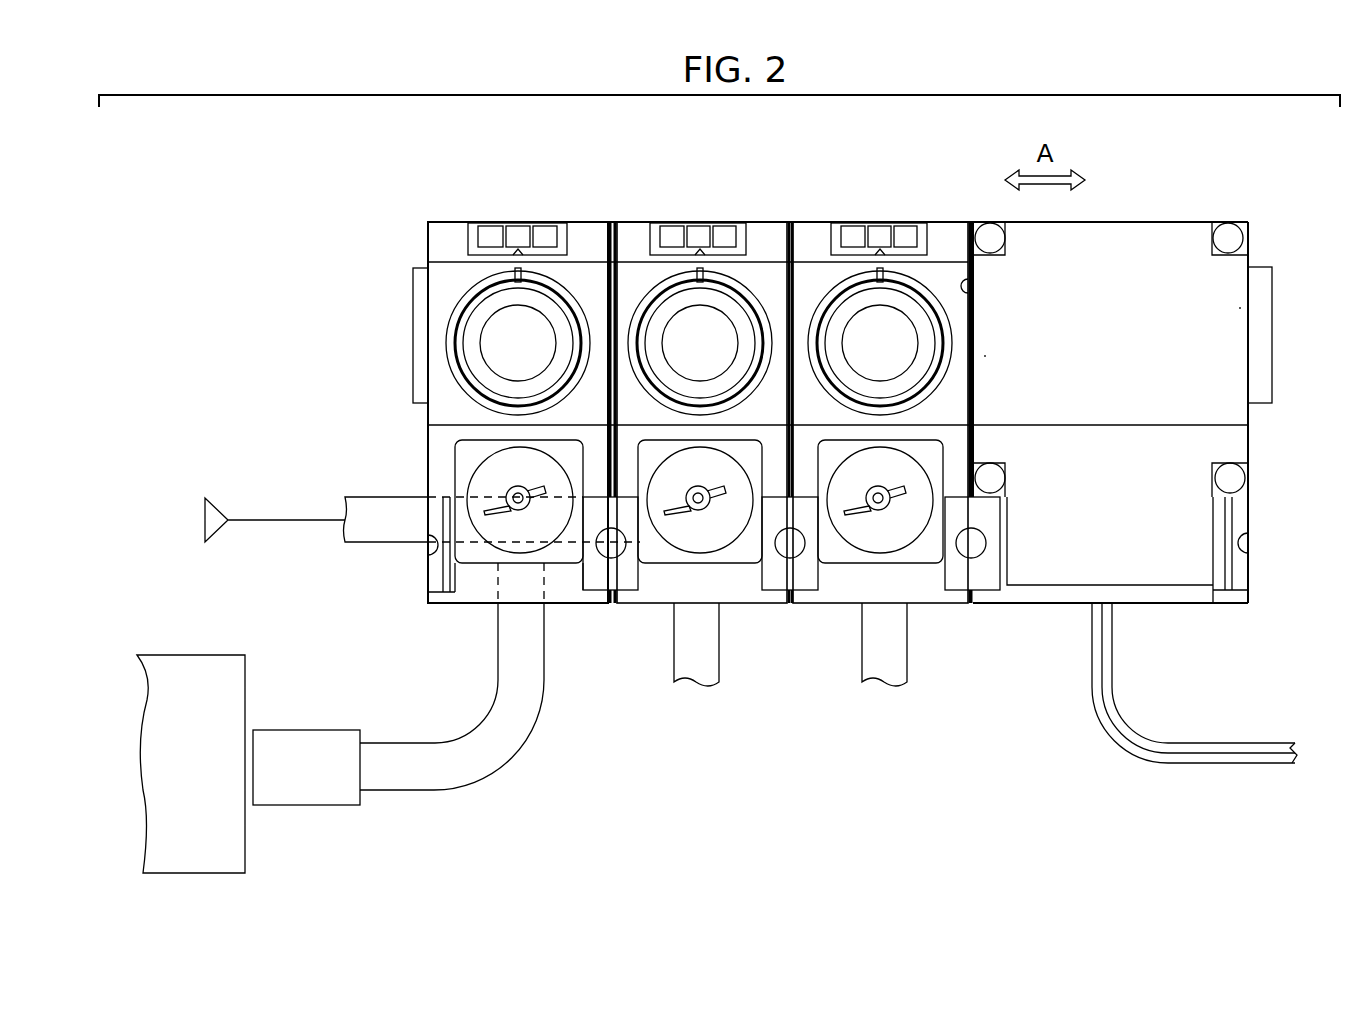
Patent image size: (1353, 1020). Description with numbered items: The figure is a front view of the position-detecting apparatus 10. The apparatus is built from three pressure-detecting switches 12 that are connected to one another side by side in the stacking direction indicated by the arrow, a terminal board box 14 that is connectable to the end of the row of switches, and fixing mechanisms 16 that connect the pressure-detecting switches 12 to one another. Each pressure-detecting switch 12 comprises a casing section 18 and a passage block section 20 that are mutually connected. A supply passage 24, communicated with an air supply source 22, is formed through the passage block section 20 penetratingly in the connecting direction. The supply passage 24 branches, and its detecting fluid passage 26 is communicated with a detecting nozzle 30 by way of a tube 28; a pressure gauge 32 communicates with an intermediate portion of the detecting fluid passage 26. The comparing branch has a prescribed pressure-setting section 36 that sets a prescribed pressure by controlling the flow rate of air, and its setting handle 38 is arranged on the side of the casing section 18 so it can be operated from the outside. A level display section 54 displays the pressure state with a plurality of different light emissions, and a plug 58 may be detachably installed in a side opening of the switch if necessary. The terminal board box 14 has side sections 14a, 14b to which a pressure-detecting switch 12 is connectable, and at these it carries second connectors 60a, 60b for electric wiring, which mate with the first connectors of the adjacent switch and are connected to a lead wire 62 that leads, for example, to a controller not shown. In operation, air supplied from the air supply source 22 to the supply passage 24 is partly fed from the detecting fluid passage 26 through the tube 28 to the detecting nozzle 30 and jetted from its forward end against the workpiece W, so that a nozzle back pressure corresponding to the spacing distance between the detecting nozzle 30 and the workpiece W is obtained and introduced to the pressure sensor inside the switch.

The position-detecting apparatus 10 is at (1171, 131).
The pressure-detecting switch 12 is at (582, 190).
The terminal board box 14 is at (1170, 203).
The side section 14a is at (968, 287).
The side section 14b is at (1250, 248).
The fixing mechanism 16 is at (630, 594).
The casing section 18 is at (425, 243).
The passage block section 20 is at (460, 606).
The air supply source 22 is at (224, 505).
The supply passage 24 is at (440, 490).
The detecting fluid passage 26 is at (545, 603).
The tube 28 is at (515, 743).
The detecting nozzle 30 is at (308, 753).
The pressure gauge 32 is at (562, 457).
The prescribed pressure-setting section 36 is at (445, 298).
The setting handle 38 is at (455, 330).
The level display section 54 is at (515, 222).
The plug 58 is at (413, 376).
The second connector 60a is at (985, 356).
The second connector 60b is at (1240, 309).
The lead wire 62 is at (1110, 657).
The workpiece W is at (203, 685).